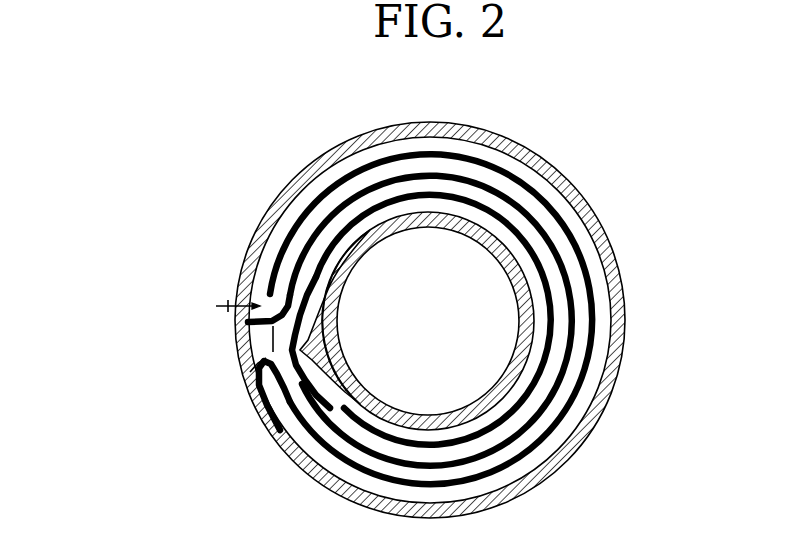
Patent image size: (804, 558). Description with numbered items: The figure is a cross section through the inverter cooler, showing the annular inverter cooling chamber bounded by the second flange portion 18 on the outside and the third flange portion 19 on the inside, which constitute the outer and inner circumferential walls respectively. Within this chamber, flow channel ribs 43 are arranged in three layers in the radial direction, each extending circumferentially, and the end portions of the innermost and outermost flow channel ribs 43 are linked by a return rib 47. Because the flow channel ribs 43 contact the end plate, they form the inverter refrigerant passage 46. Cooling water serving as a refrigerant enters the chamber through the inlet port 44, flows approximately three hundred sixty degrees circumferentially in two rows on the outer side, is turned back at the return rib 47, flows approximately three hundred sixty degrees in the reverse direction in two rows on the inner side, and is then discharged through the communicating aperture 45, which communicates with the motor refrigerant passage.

The inverter refrigerant passage 46 is at (580, 238).
The flow channel ribs 43 is at (593, 305).
The second flange portion 18 is at (609, 386).
The third flange portion 19 is at (518, 383).
The inlet port 44 is at (241, 304).
The communicating aperture 45 is at (258, 352).
The return rib 47 is at (270, 408).